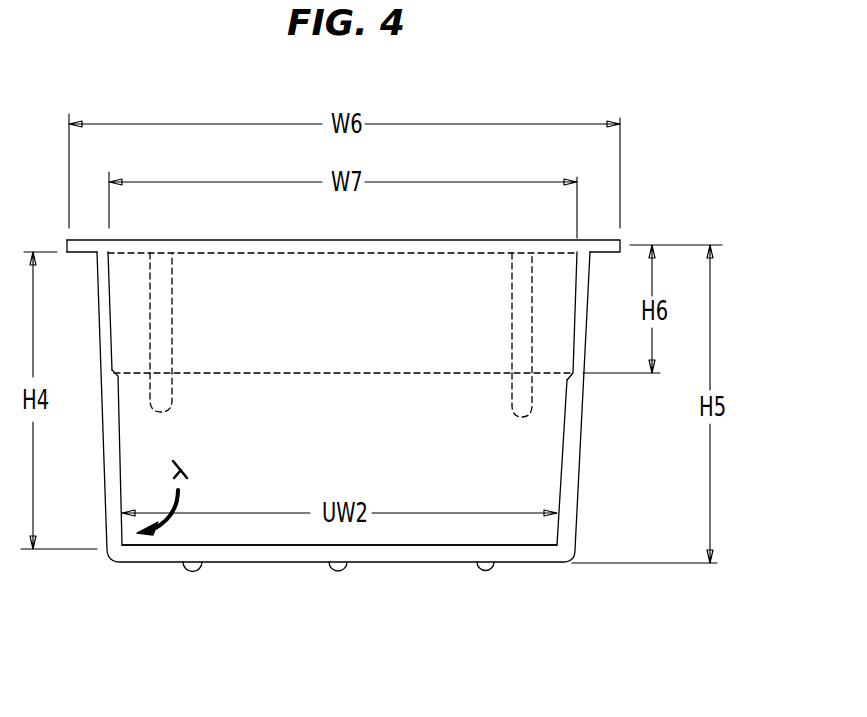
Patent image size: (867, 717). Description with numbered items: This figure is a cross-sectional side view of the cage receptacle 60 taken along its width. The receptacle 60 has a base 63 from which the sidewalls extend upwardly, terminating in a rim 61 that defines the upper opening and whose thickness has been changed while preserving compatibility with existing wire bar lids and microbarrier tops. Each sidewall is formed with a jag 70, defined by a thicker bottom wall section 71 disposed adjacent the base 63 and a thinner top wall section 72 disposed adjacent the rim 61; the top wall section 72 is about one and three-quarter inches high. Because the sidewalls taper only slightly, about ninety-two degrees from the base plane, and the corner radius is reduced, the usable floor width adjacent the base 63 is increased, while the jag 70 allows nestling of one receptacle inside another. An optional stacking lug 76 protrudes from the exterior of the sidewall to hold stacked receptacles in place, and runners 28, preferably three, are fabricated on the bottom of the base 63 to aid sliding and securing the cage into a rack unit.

The cage receptacle 60 is at (430, 388).
The rim 61 is at (610, 252).
The base 63 is at (508, 546).
The jag 70 is at (468, 373).
The bottom wall section 71 is at (207, 545).
The top wall section 72 is at (207, 253).
The stacking lug 76 is at (513, 283).
The runners 28 is at (196, 568).